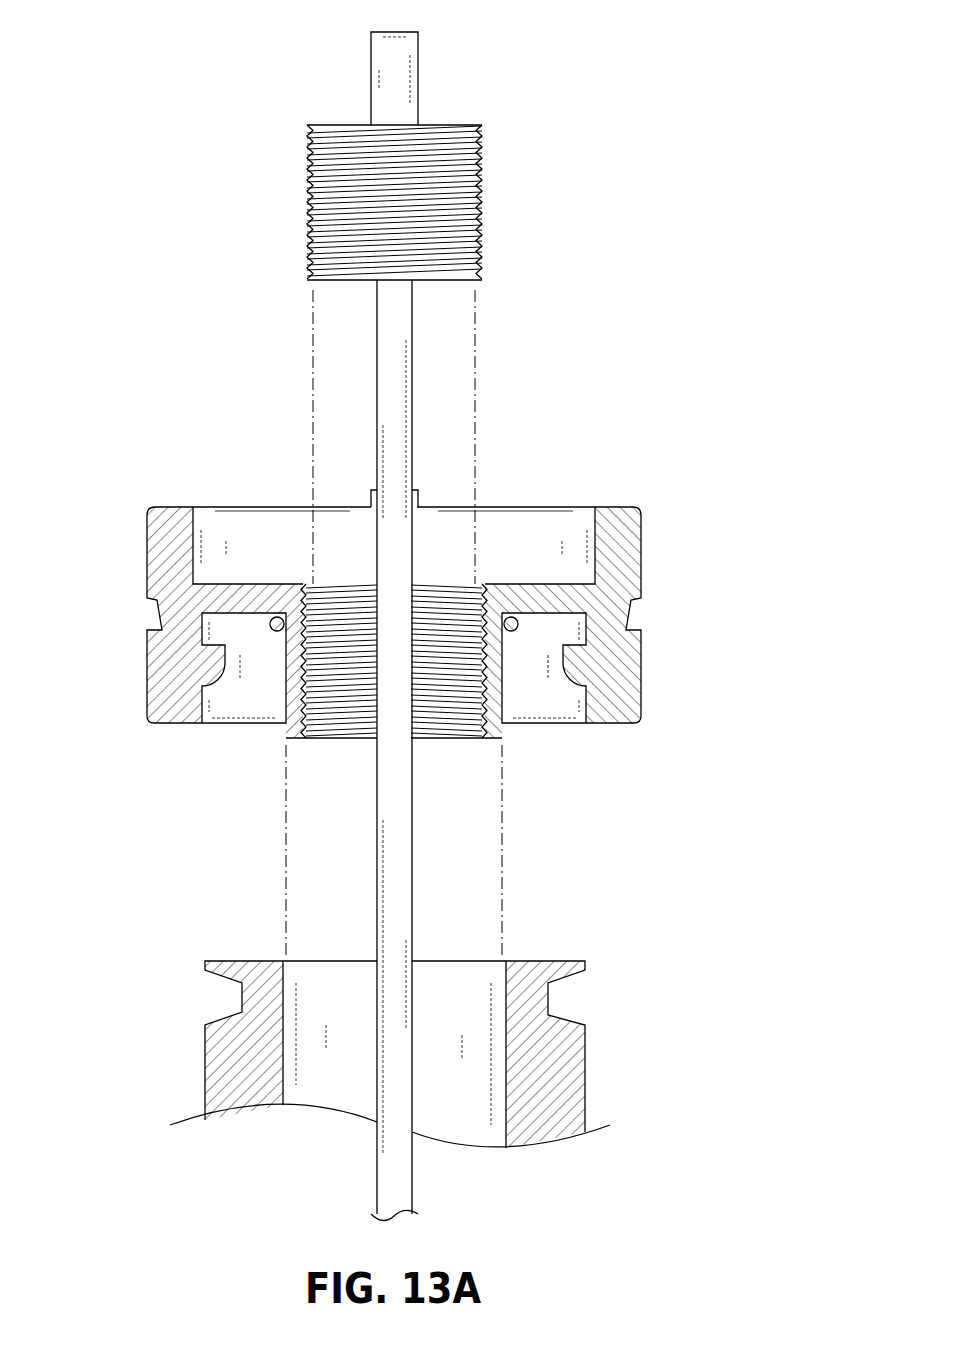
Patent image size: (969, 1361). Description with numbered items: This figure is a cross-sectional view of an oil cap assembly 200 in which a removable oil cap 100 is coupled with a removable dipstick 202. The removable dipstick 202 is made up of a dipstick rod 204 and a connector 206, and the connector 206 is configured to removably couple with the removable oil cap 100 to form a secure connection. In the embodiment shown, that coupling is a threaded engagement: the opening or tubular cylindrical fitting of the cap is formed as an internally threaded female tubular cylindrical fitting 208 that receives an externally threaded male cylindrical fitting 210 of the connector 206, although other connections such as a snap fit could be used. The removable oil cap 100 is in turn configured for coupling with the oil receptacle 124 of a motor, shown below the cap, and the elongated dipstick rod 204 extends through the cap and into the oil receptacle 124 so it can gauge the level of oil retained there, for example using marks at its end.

The removable oil cap 100 is at (147, 562).
The oil receptacle 124 is at (585, 1070).
The oil cap assembly 200 is at (660, 62).
The removable dipstick 202 is at (340, 33).
The dipstick rod 204 is at (396, 863).
The connector 206 is at (510, 214).
The internally threaded female tubular cylindrical fitting 208 is at (348, 715).
The externally threaded male cylindrical fitting 210 is at (332, 211).